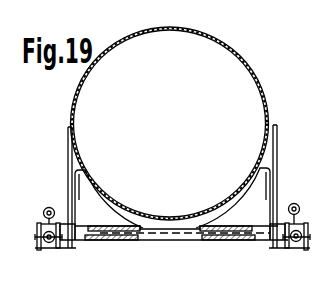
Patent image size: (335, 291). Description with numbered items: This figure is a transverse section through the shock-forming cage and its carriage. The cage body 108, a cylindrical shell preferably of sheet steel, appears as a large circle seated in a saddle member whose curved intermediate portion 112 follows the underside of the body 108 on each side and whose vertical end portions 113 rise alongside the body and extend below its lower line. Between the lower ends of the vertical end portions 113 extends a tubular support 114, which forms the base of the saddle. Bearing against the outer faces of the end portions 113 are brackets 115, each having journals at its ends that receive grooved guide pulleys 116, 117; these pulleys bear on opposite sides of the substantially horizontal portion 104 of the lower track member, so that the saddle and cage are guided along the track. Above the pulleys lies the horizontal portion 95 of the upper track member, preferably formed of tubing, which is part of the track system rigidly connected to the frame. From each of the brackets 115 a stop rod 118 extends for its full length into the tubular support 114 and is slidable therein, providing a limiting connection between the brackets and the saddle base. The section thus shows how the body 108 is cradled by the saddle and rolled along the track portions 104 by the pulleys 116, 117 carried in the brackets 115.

The cage body 108 is at (241, 57).
The vertical end portions 113 is at (67, 152).
The curved intermediate portion 112 is at (110, 208).
The tubular support 114 is at (178, 239).
The stop rod 118 is at (122, 238).
The brackets 115 is at (72, 243).
The horizontal portion of lower track member 104 is at (60, 247).
The grooved guide pulley 117 is at (49, 250).
The grooved guide pulley 116 is at (58, 229).
The horizontal portion of track member 95 is at (45, 209).